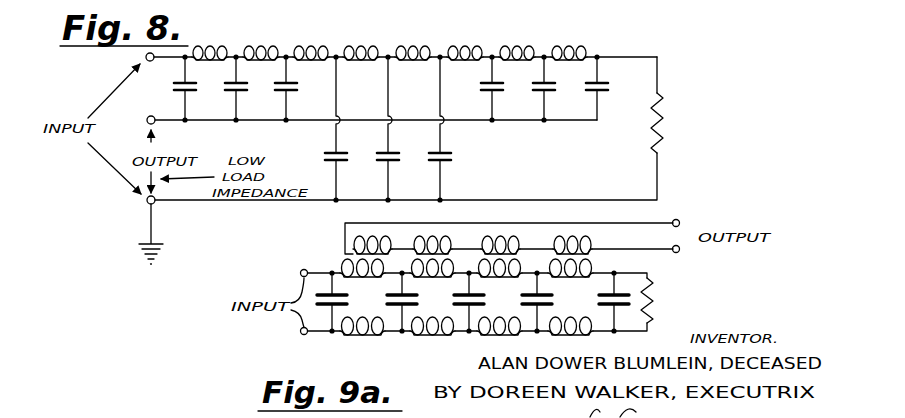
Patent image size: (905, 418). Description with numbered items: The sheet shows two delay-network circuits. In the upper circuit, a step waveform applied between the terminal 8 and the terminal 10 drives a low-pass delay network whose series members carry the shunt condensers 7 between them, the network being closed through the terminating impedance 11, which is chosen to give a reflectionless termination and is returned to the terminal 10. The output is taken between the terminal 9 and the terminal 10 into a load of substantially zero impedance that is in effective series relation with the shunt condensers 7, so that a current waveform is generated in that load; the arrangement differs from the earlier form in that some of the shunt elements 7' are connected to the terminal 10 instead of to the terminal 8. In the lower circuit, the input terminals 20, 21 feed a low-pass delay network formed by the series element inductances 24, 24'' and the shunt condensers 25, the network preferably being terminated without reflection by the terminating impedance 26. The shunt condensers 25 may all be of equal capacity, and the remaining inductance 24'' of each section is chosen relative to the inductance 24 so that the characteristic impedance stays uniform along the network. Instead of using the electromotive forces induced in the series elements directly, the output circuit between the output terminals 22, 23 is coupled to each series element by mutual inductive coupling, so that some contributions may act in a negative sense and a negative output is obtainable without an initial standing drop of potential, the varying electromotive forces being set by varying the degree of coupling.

In FIG. 8, the shunt condensers 7 is at (391, 88).
In FIG. 8, the shunt elements 7' is at (388, 128).
In FIG. 8, the terminal 8 is at (153, 54).
In FIG. 8, the terminal 9 is at (146, 120).
In FIG. 8, the terminal 10 is at (145, 207).
In FIG. 8, the terminating impedance 11 is at (670, 131).
In FIG. 9A, the input terminal 20 is at (320, 258).
In FIG. 9A, the input terminal 21 is at (300, 334).
In FIG. 9A, the output terminal 22 is at (679, 220).
In FIG. 9A, the output terminal 23 is at (679, 252).
In FIG. 9A, the series element inductance 24 is at (473, 282).
In FIG. 9A, the series element inductance 24'' is at (473, 341).
In FIG. 9A, the shunt condensers 25 is at (418, 306).
In FIG. 9A, the terminating impedance 26 is at (662, 306).